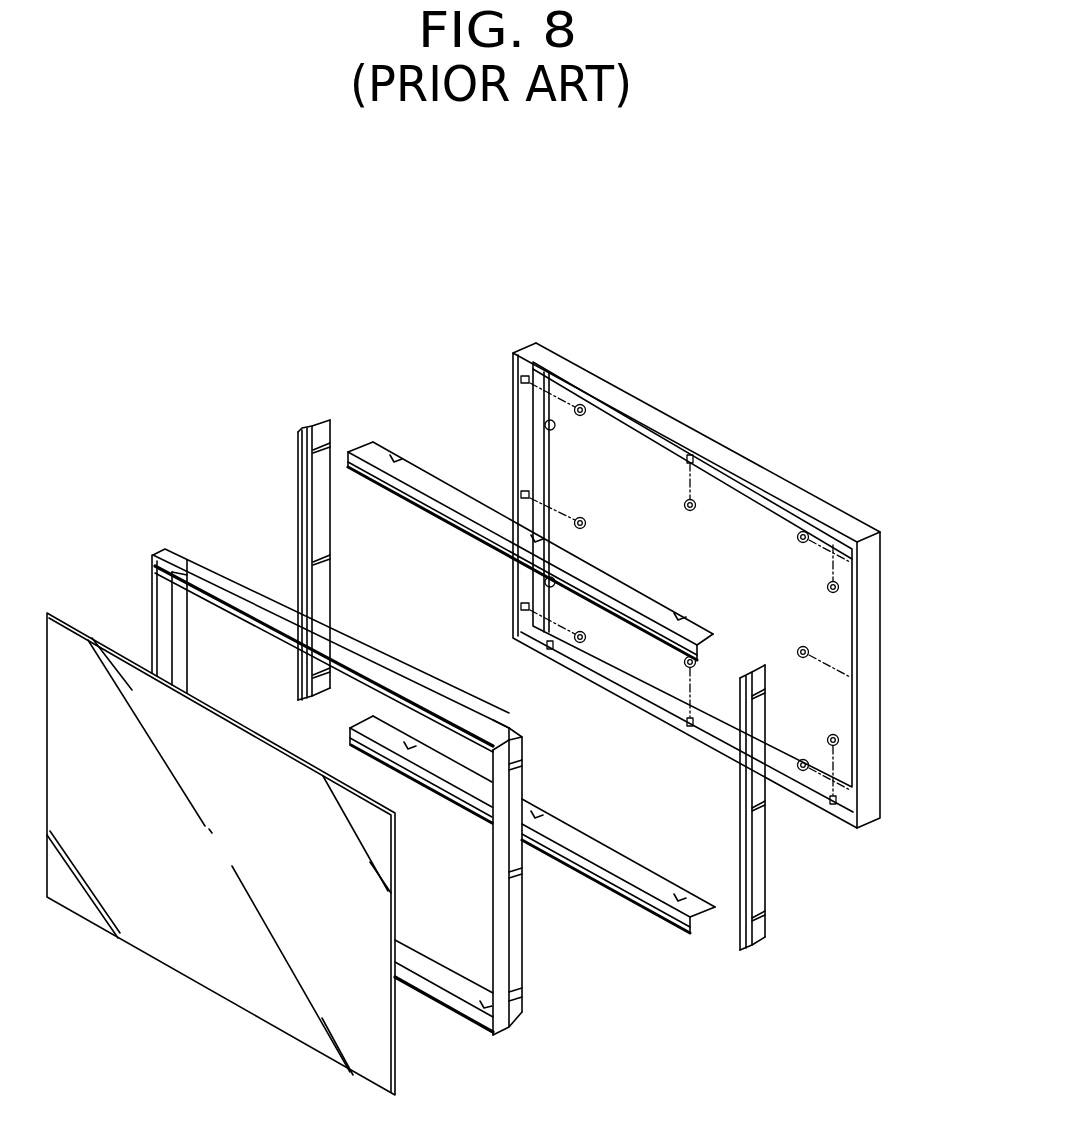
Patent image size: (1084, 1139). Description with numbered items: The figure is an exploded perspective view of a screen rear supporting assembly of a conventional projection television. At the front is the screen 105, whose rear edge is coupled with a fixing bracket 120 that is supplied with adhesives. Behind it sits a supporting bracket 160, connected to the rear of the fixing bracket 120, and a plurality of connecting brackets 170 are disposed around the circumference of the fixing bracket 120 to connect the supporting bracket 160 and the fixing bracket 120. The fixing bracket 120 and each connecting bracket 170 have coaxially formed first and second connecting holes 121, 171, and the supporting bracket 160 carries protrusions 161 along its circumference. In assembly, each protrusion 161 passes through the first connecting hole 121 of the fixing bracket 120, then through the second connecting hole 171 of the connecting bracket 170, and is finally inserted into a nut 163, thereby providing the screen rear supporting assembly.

The screen 105 is at (246, 1020).
The fixing bracket 120 is at (153, 552).
The first connecting hole 121 is at (212, 562).
The supporting bracket 160 is at (722, 453).
The protrusion 161 is at (543, 343).
The nut 163 is at (807, 532).
The connecting bracket 170 is at (468, 482).
The second connecting hole 171 is at (396, 456).